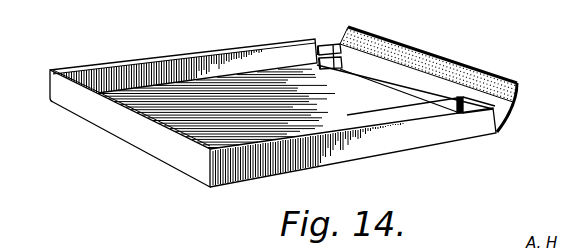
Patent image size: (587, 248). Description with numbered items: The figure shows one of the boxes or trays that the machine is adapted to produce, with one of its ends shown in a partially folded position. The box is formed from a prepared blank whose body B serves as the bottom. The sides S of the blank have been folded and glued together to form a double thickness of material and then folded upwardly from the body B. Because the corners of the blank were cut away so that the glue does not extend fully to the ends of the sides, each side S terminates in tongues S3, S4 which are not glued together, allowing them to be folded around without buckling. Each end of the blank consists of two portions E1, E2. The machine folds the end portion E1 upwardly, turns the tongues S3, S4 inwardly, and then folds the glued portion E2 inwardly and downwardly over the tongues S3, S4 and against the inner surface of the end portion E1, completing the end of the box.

The sides S is at (170, 68).
The tongue S3 is at (328, 46).
The tongue S4 is at (262, 100).
The body B is at (216, 108).
The end portion E1 is at (155, 140).
The end portion E2 is at (440, 70).